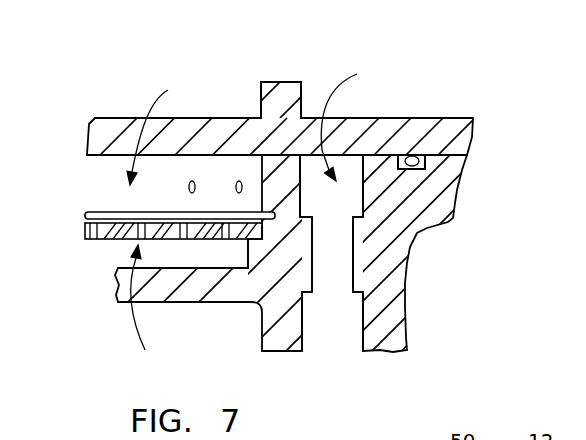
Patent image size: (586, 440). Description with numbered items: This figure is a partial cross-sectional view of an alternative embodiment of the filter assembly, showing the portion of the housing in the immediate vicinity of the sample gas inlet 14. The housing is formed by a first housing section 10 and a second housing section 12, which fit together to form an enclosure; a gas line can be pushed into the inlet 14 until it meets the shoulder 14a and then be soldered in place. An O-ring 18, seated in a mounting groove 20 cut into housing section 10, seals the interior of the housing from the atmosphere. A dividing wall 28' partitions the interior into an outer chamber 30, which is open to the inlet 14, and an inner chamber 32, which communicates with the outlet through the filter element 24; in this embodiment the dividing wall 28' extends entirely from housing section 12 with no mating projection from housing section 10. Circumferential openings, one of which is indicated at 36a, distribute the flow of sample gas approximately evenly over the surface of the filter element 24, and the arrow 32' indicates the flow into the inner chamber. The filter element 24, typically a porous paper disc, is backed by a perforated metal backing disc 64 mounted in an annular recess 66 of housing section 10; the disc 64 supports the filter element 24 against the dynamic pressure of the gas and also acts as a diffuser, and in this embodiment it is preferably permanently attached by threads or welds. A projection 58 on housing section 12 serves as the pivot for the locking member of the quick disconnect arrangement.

The first housing section 10 is at (182, 303).
The second housing section 12 is at (123, 117).
The sample gas inlet 14 is at (328, 337).
The shoulder 14a is at (308, 296).
The O-ring 18 is at (410, 153).
The mounting groove 20 is at (425, 170).
The filter element 24 is at (126, 211).
The dividing wall 28' is at (331, 186).
The outer chamber 30 is at (351, 119).
The inner chamber 32 is at (159, 127).
The direction arrow 32' is at (147, 309).
The apertures 36a is at (236, 187).
The projection 58 is at (300, 99).
The perforated metal backing disc 64 is at (124, 239).
The annular recess 66 is at (250, 239).